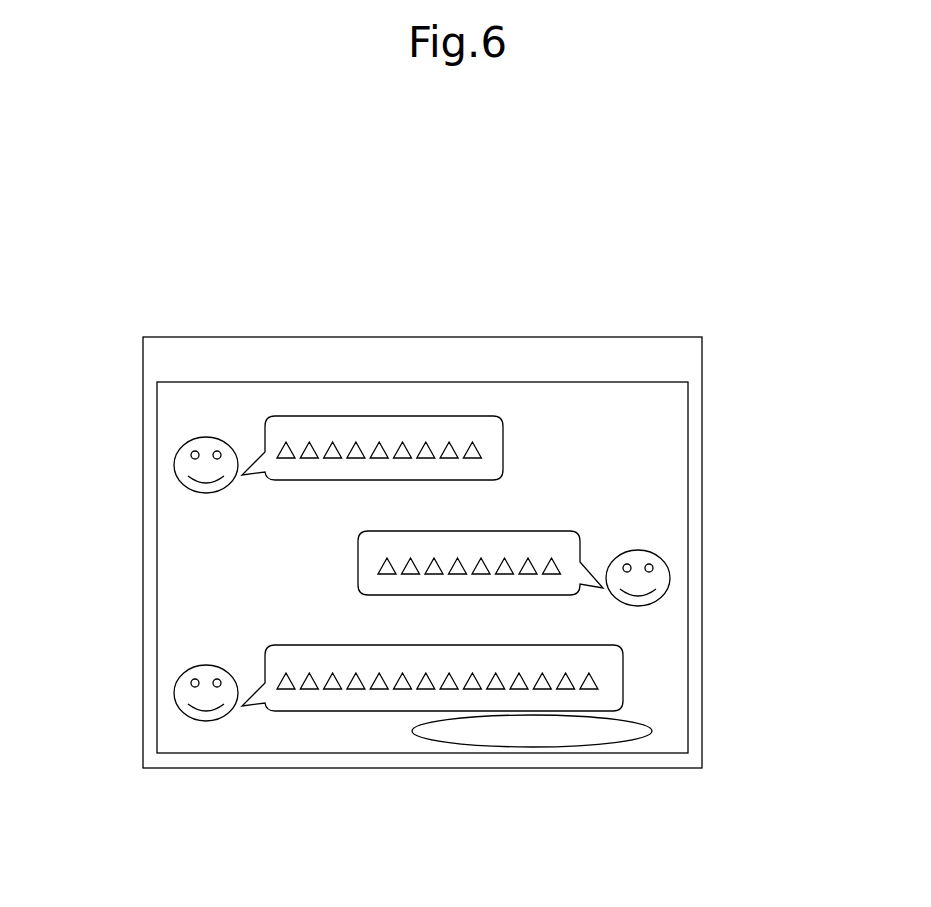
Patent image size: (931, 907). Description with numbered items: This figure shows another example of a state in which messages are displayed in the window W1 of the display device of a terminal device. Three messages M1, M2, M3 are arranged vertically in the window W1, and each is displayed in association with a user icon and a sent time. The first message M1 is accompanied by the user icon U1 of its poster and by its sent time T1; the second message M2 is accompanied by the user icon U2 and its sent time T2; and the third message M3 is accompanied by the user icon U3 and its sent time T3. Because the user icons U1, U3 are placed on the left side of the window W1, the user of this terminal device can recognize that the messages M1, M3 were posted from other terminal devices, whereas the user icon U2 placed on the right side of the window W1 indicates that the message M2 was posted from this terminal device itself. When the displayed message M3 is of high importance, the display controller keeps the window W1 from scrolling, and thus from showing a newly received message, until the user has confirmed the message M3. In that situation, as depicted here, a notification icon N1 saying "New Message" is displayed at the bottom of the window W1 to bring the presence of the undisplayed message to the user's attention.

The window W1 is at (373, 768).
The user icon U1 is at (193, 438).
The user icon U2 is at (657, 553).
The user icon U3 is at (193, 670).
The message M1 is at (472, 433).
The message M2 is at (540, 548).
The message M3 is at (583, 663).
The sent time T1 is at (568, 467).
The sent time T2 is at (322, 570).
The sent time T3 is at (657, 685).
The notification icon N1 is at (600, 745).